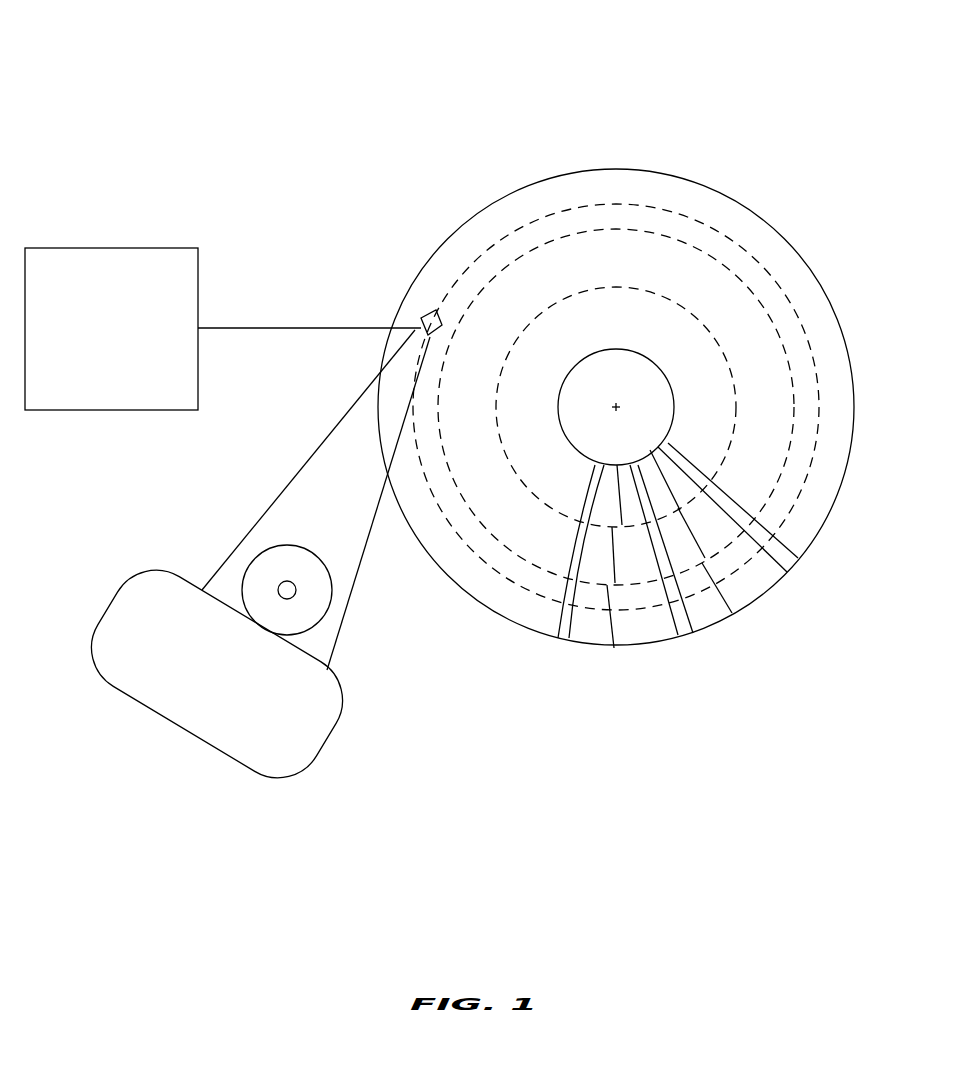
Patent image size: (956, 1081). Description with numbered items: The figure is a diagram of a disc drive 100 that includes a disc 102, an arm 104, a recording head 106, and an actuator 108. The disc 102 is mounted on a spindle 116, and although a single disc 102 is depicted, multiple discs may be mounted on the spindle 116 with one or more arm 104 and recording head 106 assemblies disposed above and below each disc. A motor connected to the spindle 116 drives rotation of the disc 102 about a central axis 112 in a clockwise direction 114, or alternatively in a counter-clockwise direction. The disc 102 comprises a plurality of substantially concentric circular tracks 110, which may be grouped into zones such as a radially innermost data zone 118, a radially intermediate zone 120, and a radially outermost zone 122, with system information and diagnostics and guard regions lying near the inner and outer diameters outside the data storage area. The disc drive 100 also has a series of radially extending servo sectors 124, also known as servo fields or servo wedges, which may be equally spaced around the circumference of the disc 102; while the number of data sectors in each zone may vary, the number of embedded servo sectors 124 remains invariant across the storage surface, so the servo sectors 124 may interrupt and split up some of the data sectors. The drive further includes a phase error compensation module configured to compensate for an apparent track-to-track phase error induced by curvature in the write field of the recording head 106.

The disc drive 100 is at (178, 58).
The disc 102 is at (430, 258).
The arm 104 is at (301, 495).
The recording head 106 is at (420, 320).
The actuator 108 is at (200, 744).
The tracks 110 is at (515, 230).
The central axis 112 is at (618, 404).
The clockwise direction 114 is at (672, 152).
The spindle 116 is at (590, 352).
The radially innermost data zone 118 is at (734, 403).
The radially intermediate zone 120 is at (792, 403).
The radially outermost zone 122 is at (852, 403).
The servo sectors 124 is at (681, 648).